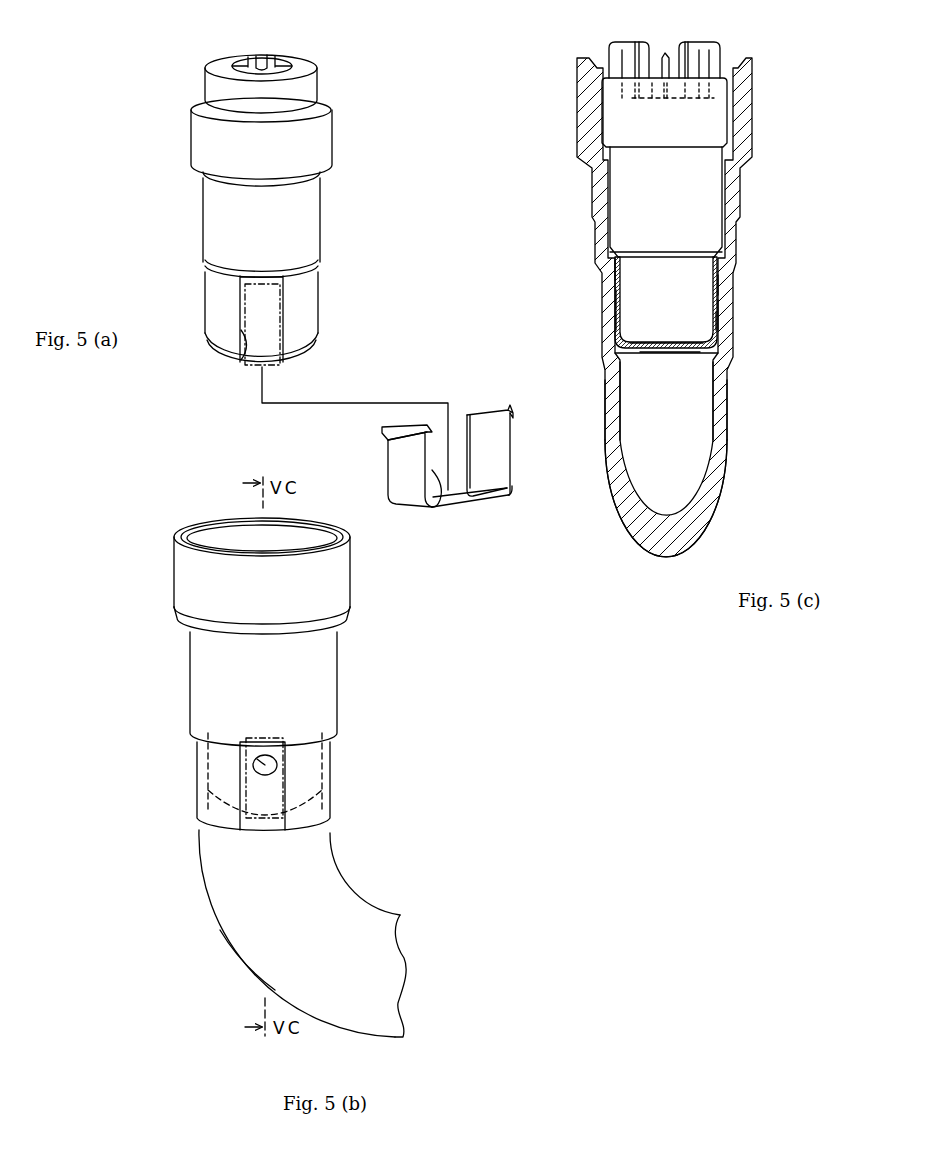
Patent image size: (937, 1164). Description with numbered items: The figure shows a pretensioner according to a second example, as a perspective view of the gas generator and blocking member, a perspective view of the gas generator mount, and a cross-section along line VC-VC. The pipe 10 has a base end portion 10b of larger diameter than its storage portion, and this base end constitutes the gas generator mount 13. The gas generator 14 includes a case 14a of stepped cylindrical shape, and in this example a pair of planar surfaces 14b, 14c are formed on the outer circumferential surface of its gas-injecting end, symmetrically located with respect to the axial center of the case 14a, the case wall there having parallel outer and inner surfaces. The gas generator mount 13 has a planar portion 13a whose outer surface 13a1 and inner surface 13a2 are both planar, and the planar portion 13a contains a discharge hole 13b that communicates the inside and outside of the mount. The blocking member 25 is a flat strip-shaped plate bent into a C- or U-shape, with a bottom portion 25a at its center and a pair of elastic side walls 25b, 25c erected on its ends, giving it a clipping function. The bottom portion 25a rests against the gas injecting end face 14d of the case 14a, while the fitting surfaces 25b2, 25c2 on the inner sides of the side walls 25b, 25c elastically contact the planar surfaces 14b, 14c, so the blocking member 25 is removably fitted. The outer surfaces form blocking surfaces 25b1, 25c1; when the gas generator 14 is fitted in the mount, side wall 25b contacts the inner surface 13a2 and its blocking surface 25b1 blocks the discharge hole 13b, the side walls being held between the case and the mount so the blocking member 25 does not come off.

The pipe 10 is at (368, 905).
In FIG. 5c, the pipe 10 is at (725, 484).
The base end portion 10b is at (255, 960).
The gas generator mount 13 is at (186, 583).
In FIG. 5c, the gas generator mount 13 is at (574, 87).
The planar portion 13a is at (263, 786).
In FIG. 5c, the planar portion 13a is at (728, 354).
The outer surface 13a1 is at (265, 830).
In FIG. 5c, the outer surface 13a1 is at (719, 312).
In FIG. 5c, the inner surface 13a2 is at (707, 360).
The discharge hole 13b is at (258, 768).
In FIG. 5c, the discharge hole 13b is at (719, 283).
The gas generator 14 is at (346, 117).
In FIG. 5c, the gas generator 14 is at (608, 138).
In FIG. 5c, the case 14a is at (627, 201).
The planar surface 14b is at (240, 362).
In FIG. 5c, the planar surface 14b is at (718, 318).
In FIG. 5c, the planar surface 14c is at (616, 279).
The gas injecting end face 14d is at (306, 352).
In FIG. 5c, the blocking member 25 is at (683, 352).
The bottom portion 25a is at (472, 496).
In FIG. 5c, the bottom portion 25a is at (714, 268).
The side wall 25b is at (403, 468).
The blocking surface 25b1 is at (392, 448).
In FIG. 5c, the blocking surface 25b1 is at (718, 328).
The fitting surface 25b2 is at (442, 507).
The side wall 25c is at (515, 455).
In FIG. 5c, the side wall 25c is at (618, 298).
The blocking surface 25c1 is at (512, 432).
In FIG. 5c, the blocking surface 25c1 is at (620, 325).
The fitting surface 25c2 is at (472, 442).